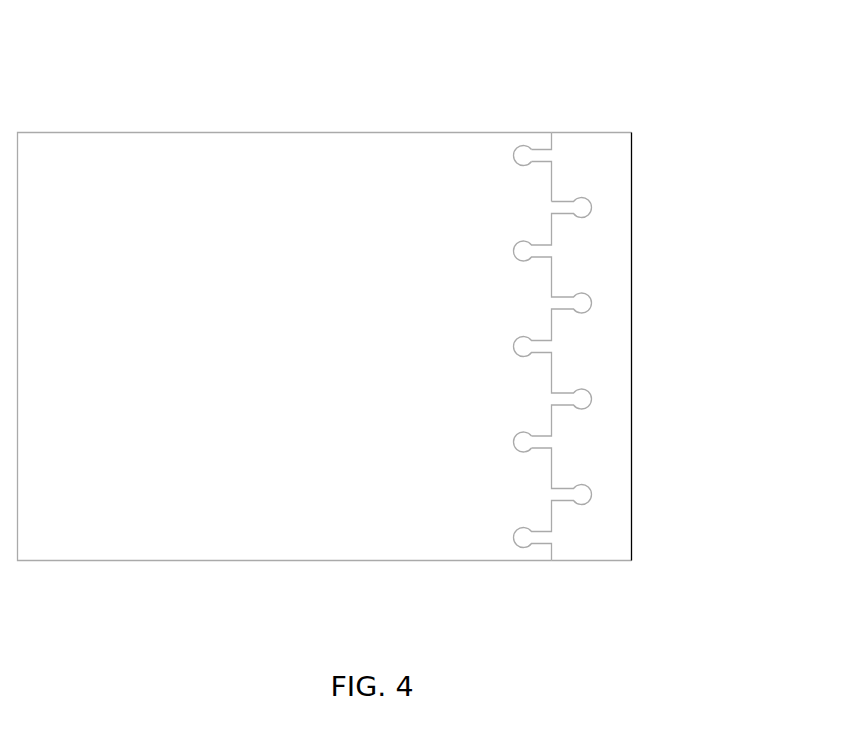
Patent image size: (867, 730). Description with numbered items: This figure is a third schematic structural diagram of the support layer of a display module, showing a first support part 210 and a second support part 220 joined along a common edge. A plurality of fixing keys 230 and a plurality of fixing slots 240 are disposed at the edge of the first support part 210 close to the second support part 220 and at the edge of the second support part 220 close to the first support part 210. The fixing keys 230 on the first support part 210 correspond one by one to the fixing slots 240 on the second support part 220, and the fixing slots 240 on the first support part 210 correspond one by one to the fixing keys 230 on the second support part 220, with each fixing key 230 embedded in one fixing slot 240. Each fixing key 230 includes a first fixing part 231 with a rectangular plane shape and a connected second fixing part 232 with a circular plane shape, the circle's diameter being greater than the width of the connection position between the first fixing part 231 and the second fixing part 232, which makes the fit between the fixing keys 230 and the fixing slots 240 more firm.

The first support part 210 is at (218, 197).
The second support part 220 is at (602, 357).
The fixing key 230 is at (459, 329).
The first fixing part 231 is at (545, 150).
The second fixing part 232 is at (485, 118).
The fixing slot 240 is at (514, 441).